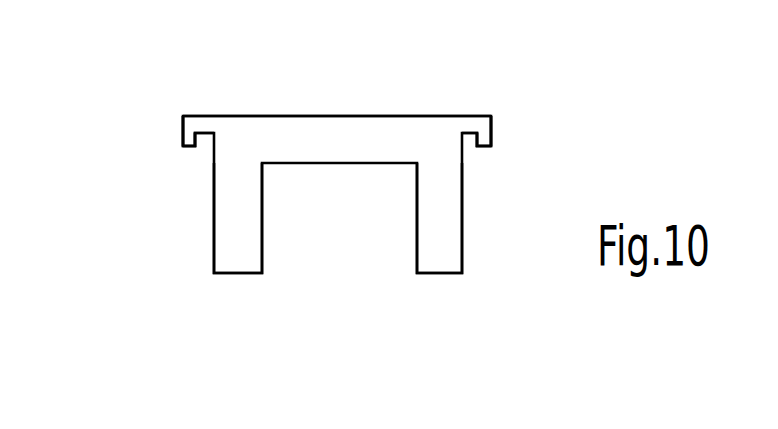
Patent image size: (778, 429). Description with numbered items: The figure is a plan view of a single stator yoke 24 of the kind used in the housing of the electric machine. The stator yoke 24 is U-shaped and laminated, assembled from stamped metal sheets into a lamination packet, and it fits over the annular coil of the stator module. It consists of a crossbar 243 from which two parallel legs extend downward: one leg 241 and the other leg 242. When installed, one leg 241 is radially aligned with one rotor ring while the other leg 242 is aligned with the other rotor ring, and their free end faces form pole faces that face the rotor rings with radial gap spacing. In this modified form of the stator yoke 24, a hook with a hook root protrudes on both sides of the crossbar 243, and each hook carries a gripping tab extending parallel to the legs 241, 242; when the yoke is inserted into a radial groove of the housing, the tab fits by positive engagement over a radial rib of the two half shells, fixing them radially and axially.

The stator yoke 24 is at (343, 205).
The leg 241 is at (448, 227).
The leg 242 is at (228, 240).
The crossbar 243 is at (325, 142).